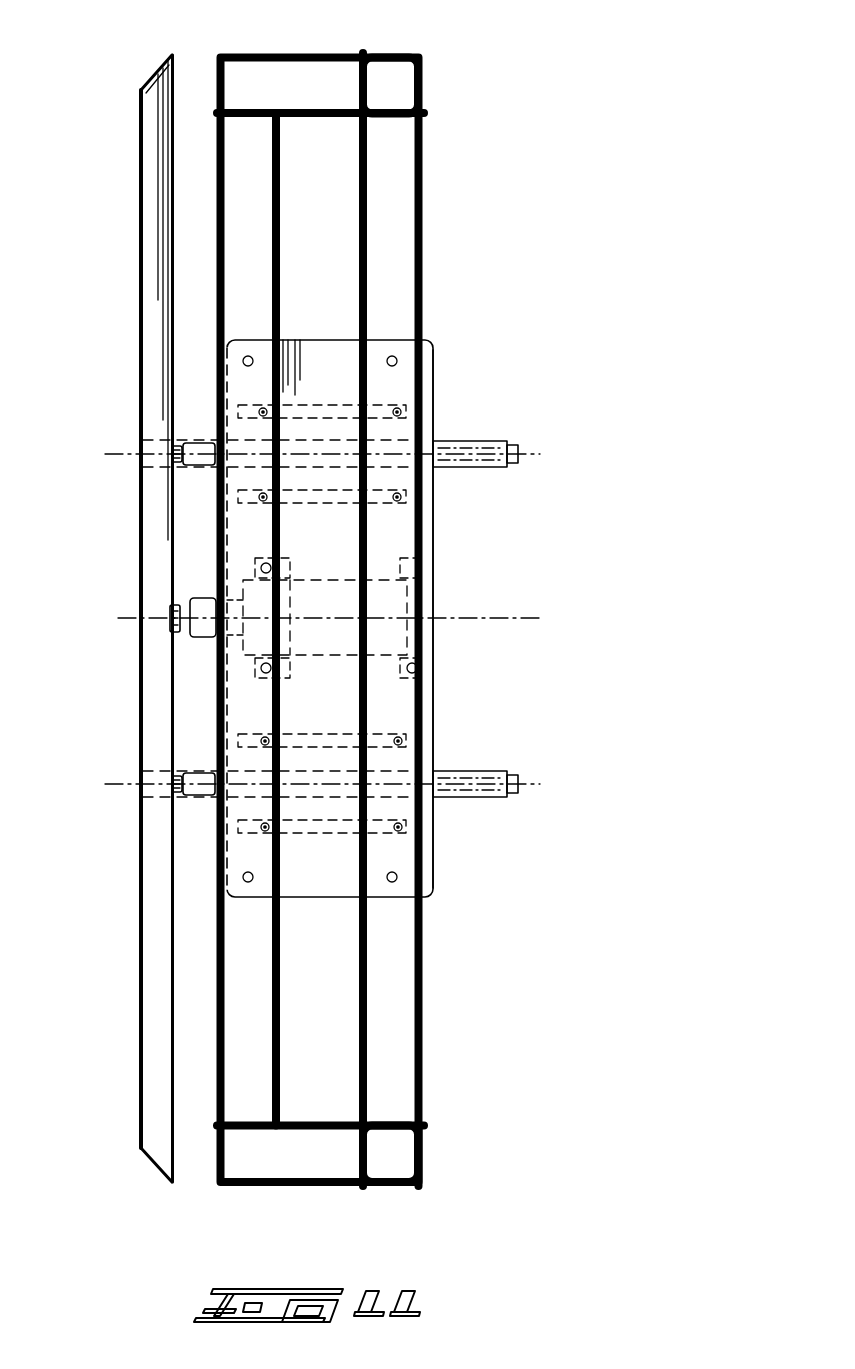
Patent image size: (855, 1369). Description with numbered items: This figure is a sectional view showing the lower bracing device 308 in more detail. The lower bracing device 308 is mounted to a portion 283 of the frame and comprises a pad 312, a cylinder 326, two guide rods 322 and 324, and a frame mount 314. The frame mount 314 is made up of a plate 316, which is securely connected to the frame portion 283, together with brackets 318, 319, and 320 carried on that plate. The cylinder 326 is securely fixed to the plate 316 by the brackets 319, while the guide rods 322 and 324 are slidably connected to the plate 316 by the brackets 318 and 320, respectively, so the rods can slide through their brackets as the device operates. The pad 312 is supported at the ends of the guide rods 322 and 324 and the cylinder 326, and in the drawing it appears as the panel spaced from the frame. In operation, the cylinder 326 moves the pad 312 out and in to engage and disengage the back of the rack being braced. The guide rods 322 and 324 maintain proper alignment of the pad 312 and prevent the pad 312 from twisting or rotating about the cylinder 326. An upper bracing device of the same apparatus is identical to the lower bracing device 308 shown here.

The lower bracing device 308 is at (505, 117).
The frame portion 283 is at (425, 1060).
The pad 312 is at (153, 1075).
The frame mount 314 is at (435, 372).
The plate 316 is at (433, 520).
The bracket 318 is at (326, 410).
The brackets 319 is at (292, 668).
The bracket 320 is at (407, 740).
The guide rod 322 is at (500, 440).
The guide rod 324 is at (505, 770).
The cylinder 326 is at (378, 590).